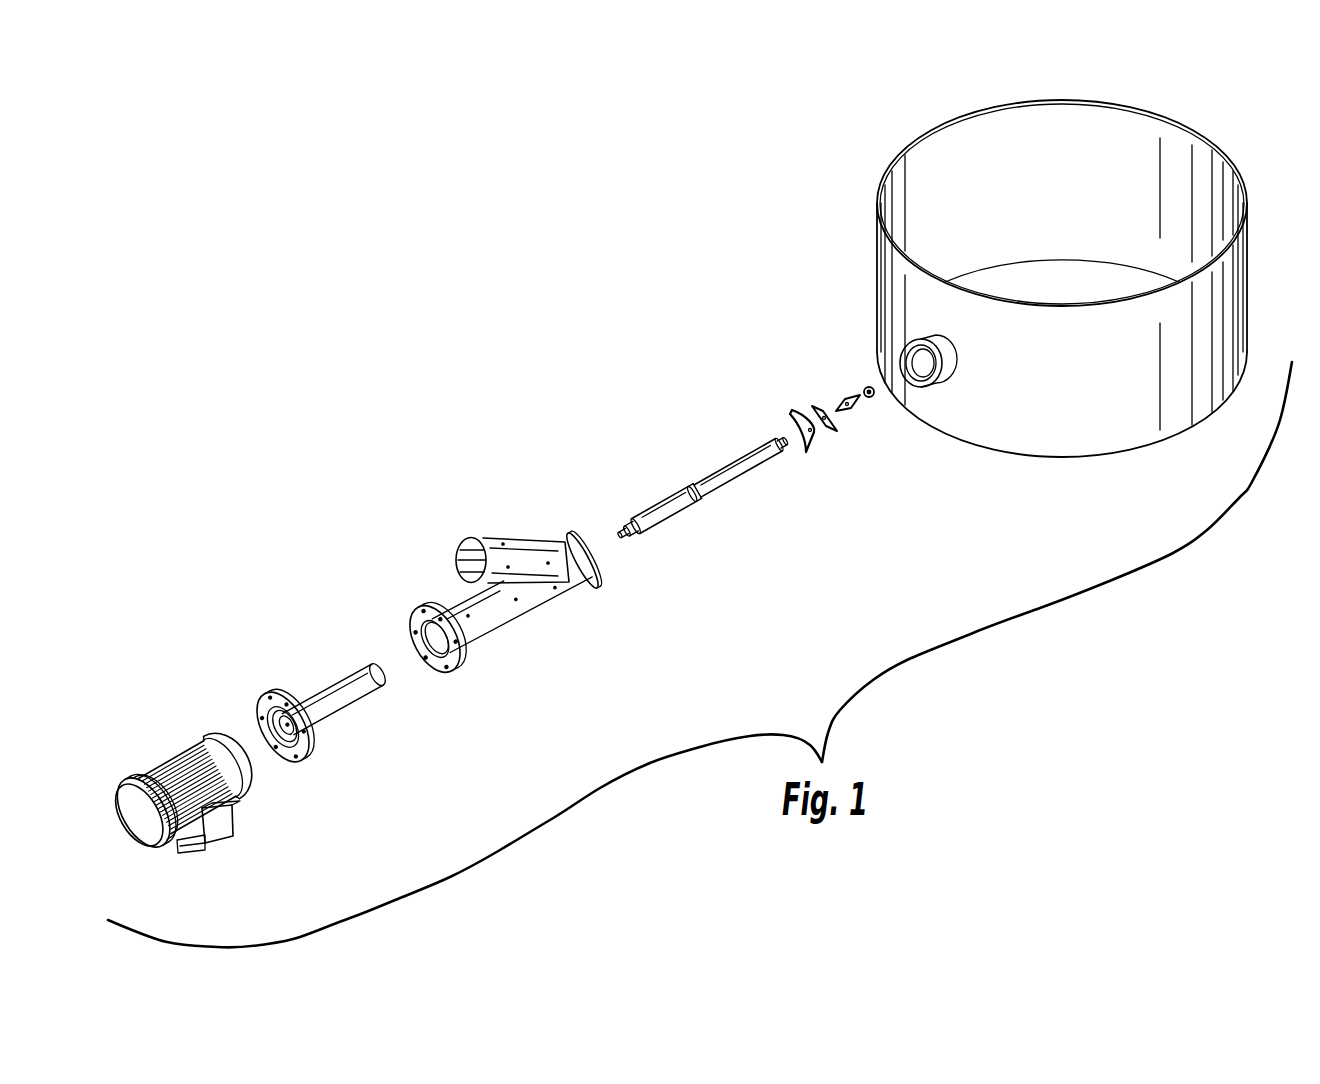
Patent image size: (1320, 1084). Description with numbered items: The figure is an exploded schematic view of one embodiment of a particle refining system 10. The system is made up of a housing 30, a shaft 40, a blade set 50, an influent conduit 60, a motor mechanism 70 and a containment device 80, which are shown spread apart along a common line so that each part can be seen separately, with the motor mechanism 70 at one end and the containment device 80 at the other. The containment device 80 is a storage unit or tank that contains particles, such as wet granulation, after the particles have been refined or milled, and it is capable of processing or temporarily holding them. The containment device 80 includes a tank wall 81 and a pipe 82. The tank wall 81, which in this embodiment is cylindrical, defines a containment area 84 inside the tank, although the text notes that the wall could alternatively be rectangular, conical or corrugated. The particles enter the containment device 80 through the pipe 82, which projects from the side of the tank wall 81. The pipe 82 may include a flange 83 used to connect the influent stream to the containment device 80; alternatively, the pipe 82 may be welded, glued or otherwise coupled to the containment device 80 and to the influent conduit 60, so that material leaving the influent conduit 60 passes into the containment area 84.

The particle refining system 10 is at (563, 385).
The housing 30 is at (352, 711).
The shaft 40 is at (714, 490).
The blade set 50 is at (882, 408).
The influent conduit 60 is at (527, 612).
The motor mechanism 70 is at (236, 828).
The containment device 80 is at (1063, 437).
The tank wall 81 is at (897, 285).
The pipe 82 is at (945, 382).
The flange 83 is at (915, 392).
The containment area 84 is at (1036, 166).